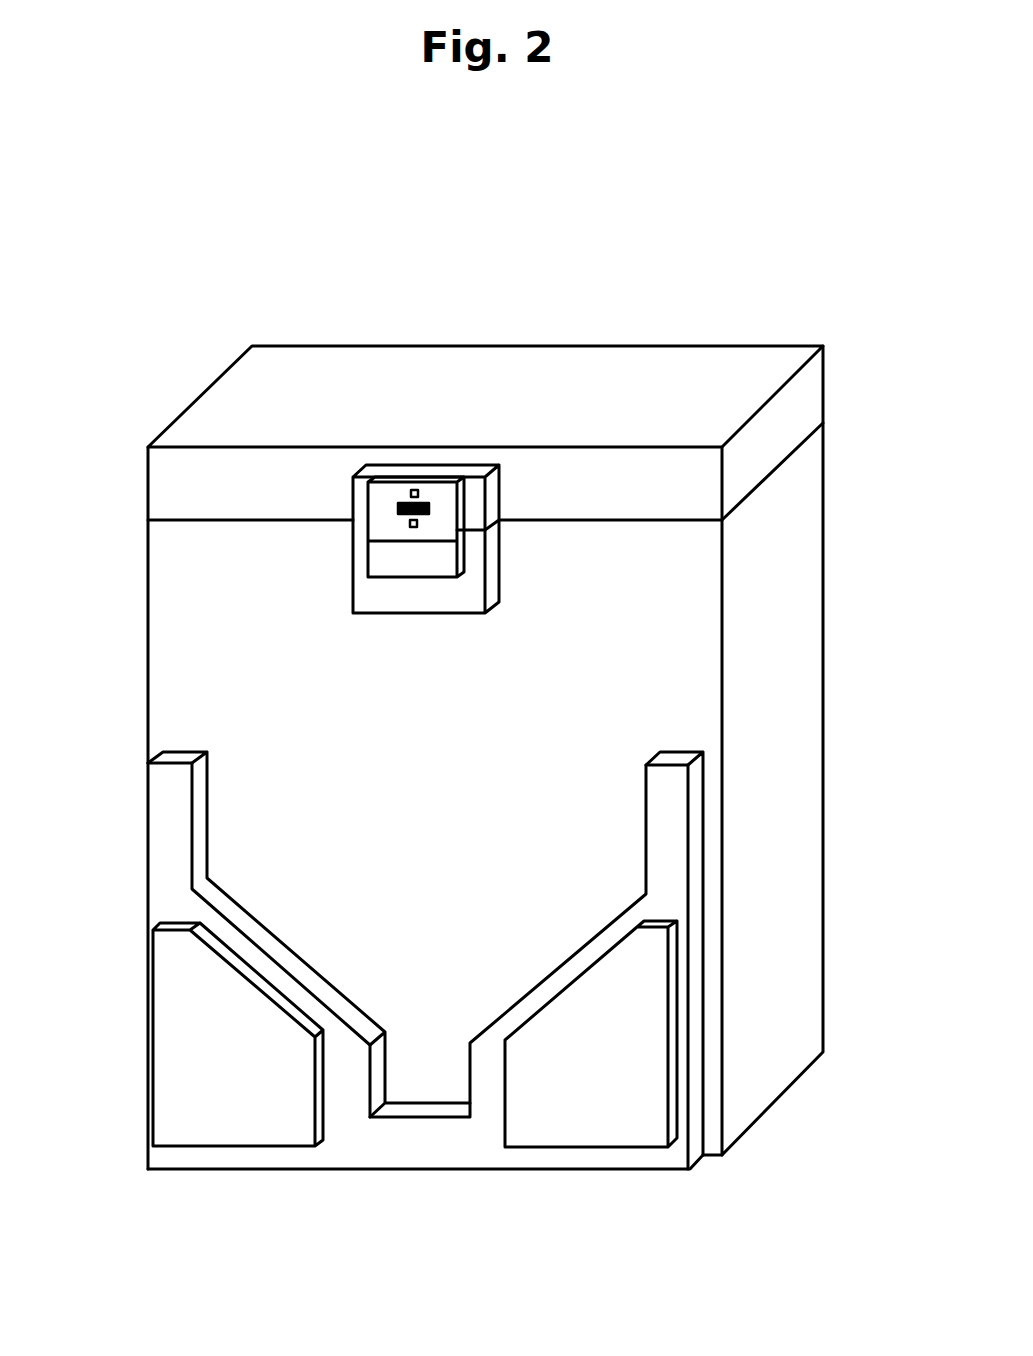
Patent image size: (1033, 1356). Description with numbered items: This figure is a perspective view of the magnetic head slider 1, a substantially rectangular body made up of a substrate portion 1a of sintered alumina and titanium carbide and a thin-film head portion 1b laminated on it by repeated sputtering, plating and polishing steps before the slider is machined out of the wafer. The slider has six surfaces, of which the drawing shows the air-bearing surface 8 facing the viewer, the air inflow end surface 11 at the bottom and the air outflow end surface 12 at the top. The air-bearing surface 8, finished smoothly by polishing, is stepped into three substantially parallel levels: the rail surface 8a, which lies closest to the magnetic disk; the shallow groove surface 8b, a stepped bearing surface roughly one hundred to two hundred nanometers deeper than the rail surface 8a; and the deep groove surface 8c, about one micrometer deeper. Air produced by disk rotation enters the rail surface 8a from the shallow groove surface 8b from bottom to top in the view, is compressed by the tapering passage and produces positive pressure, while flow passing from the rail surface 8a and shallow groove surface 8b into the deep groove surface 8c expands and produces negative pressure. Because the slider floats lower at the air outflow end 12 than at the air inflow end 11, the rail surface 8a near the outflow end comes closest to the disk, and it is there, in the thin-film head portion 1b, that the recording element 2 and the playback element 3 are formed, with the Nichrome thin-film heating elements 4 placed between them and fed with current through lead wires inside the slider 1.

The magnetic head slider 1 is at (905, 360).
The substrate portion 1a is at (798, 493).
The thin-film head portion 1b is at (527, 400).
The air outflow end surface 12 is at (210, 412).
The recording element 2 is at (416, 490).
The playback element 3 is at (410, 524).
The heating element 4 is at (430, 503).
The air-bearing surface 8 is at (75, 532).
The rail surface 8a is at (380, 553).
The shallow groove surface 8b is at (380, 596).
The deep groove surface 8c is at (233, 647).
The air inflow end surface 11 is at (347, 1168).